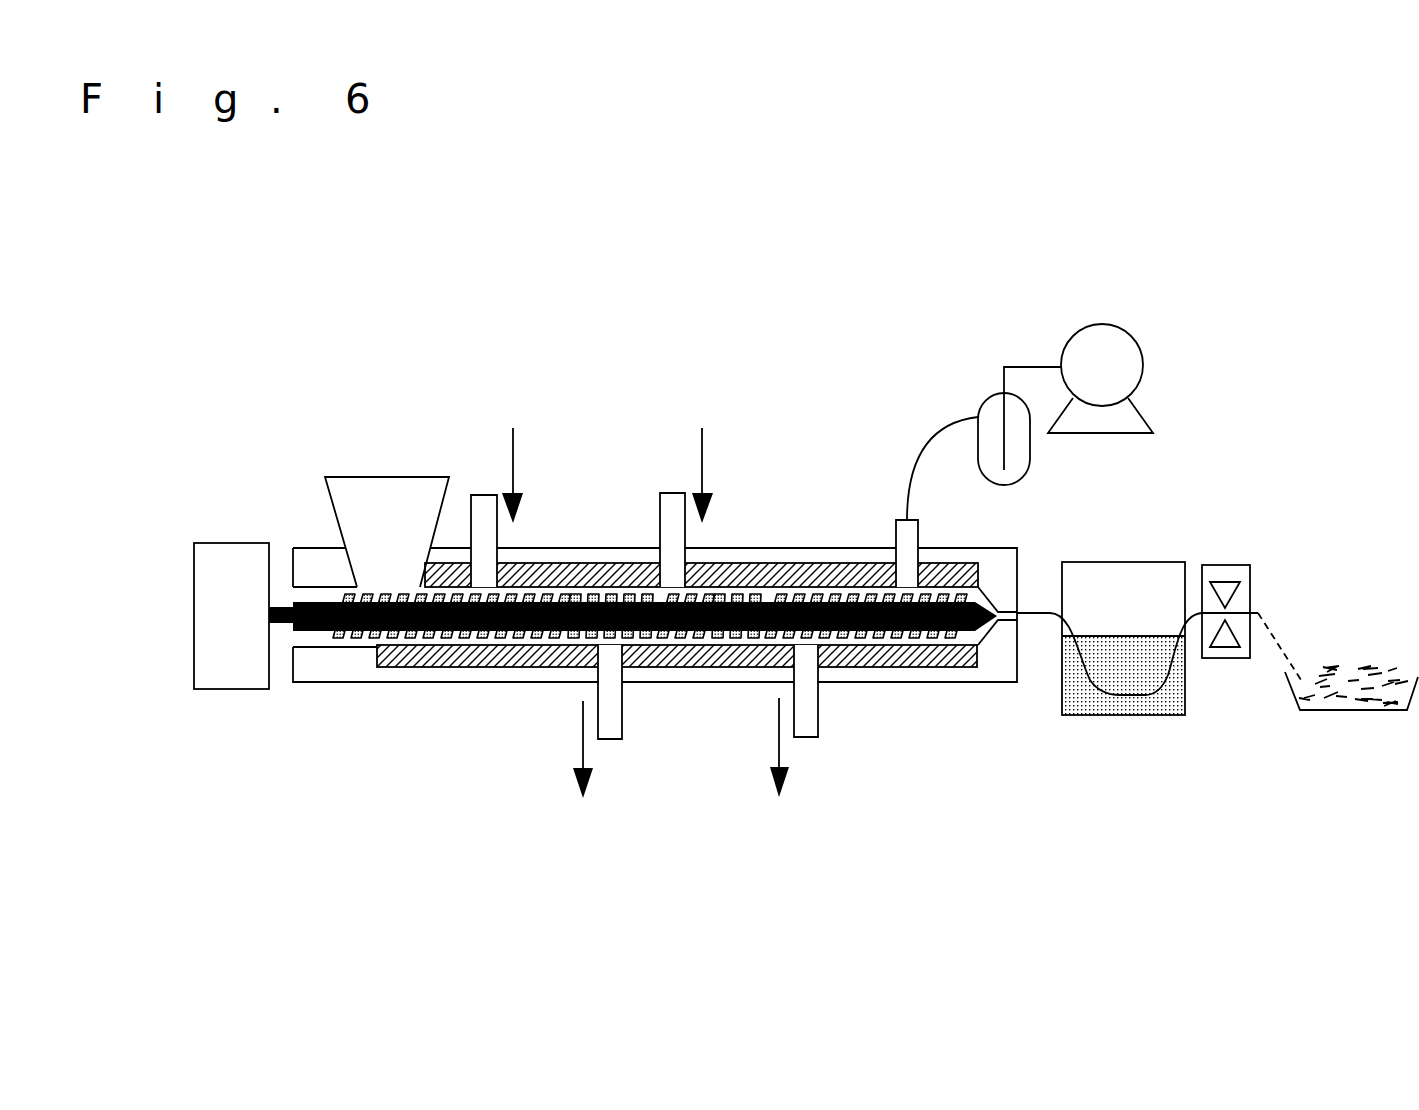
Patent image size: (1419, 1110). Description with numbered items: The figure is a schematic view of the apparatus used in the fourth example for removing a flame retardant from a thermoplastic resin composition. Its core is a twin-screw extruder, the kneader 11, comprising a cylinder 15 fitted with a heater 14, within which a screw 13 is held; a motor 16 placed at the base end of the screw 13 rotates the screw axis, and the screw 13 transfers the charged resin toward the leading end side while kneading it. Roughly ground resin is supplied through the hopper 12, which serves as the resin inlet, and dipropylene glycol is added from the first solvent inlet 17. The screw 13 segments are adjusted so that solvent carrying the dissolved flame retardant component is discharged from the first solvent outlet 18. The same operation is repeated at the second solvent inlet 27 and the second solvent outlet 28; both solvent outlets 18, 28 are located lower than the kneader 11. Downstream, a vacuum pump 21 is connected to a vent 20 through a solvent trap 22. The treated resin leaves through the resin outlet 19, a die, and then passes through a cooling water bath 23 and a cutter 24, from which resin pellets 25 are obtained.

The kneader 11 is at (915, 682).
The hopper 12 is at (335, 475).
The screw 13 is at (308, 633).
The heater 14 is at (537, 655).
The cylinder 15 is at (305, 593).
The motor 16 is at (244, 616).
The solvent inlet 17 is at (487, 493).
The solvent outlet 18 is at (622, 708).
The resin outlet 19 is at (1032, 618).
The vent 20 is at (918, 527).
The vacuum pump 21 is at (1068, 338).
The solvent trap 22 is at (987, 398).
The cooling water bath 23 is at (1127, 717).
The cutter 24 is at (1233, 658).
The resin pellet 25 is at (1353, 713).
The solvent inlet 27 is at (672, 492).
The solvent outlet 28 is at (817, 708).